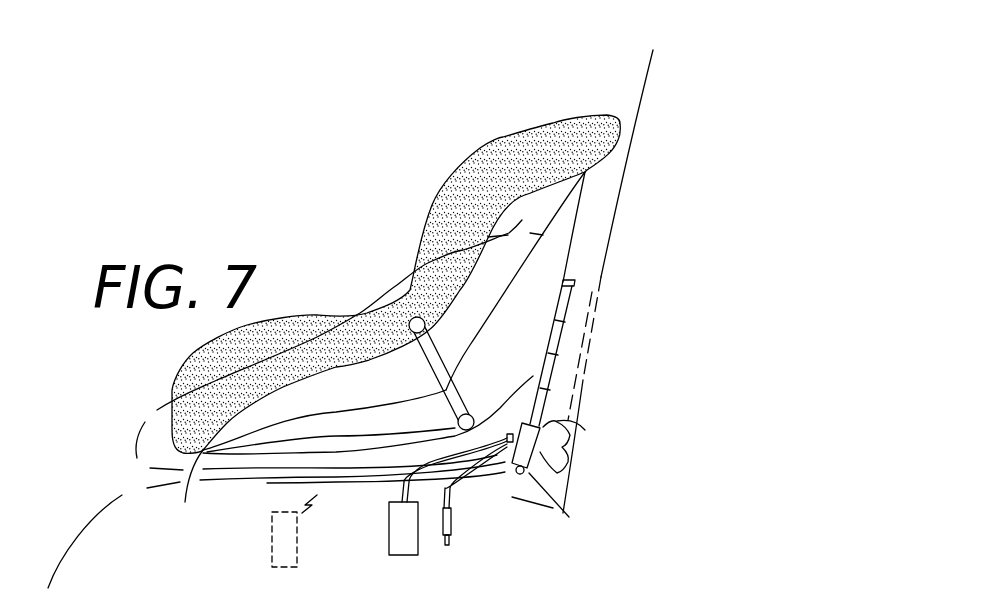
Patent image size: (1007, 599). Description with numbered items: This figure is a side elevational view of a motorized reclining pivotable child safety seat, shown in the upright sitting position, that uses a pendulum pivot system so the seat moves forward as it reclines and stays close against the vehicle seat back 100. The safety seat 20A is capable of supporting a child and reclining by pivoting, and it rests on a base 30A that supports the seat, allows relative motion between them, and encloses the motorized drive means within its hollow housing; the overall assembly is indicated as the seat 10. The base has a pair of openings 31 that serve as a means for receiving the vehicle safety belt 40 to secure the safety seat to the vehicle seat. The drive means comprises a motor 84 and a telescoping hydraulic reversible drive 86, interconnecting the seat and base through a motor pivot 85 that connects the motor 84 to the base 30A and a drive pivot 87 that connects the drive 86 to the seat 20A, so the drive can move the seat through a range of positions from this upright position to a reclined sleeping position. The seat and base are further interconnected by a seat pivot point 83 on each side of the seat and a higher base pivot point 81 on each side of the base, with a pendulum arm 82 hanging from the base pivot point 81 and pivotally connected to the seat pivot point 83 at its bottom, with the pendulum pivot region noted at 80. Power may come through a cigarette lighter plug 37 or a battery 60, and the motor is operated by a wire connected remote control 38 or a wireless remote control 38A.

The vehicle seat back 100 is at (643, 72).
The seat 10 is at (623, 117).
The safety seat 20A is at (503, 142).
The base 30A is at (137, 452).
The sensor 80 is at (418, 305).
The base pivot point 81 is at (409, 327).
The drive pivot 87 is at (583, 275).
The telescoping hydraulic reversible drive 86 is at (568, 333).
The battery 60 is at (530, 415).
The openings 31 is at (591, 446).
The vehicle safety belt 40 is at (562, 477).
The pendulum arm 82 is at (175, 495).
The seat pivot point 83 is at (388, 453).
The motor 84 is at (516, 469).
The motor pivot 85 is at (557, 514).
The wireless remote control 38A is at (280, 567).
The wire connected remote control 38 is at (392, 553).
The cigarette lighter plug 37 is at (454, 527).